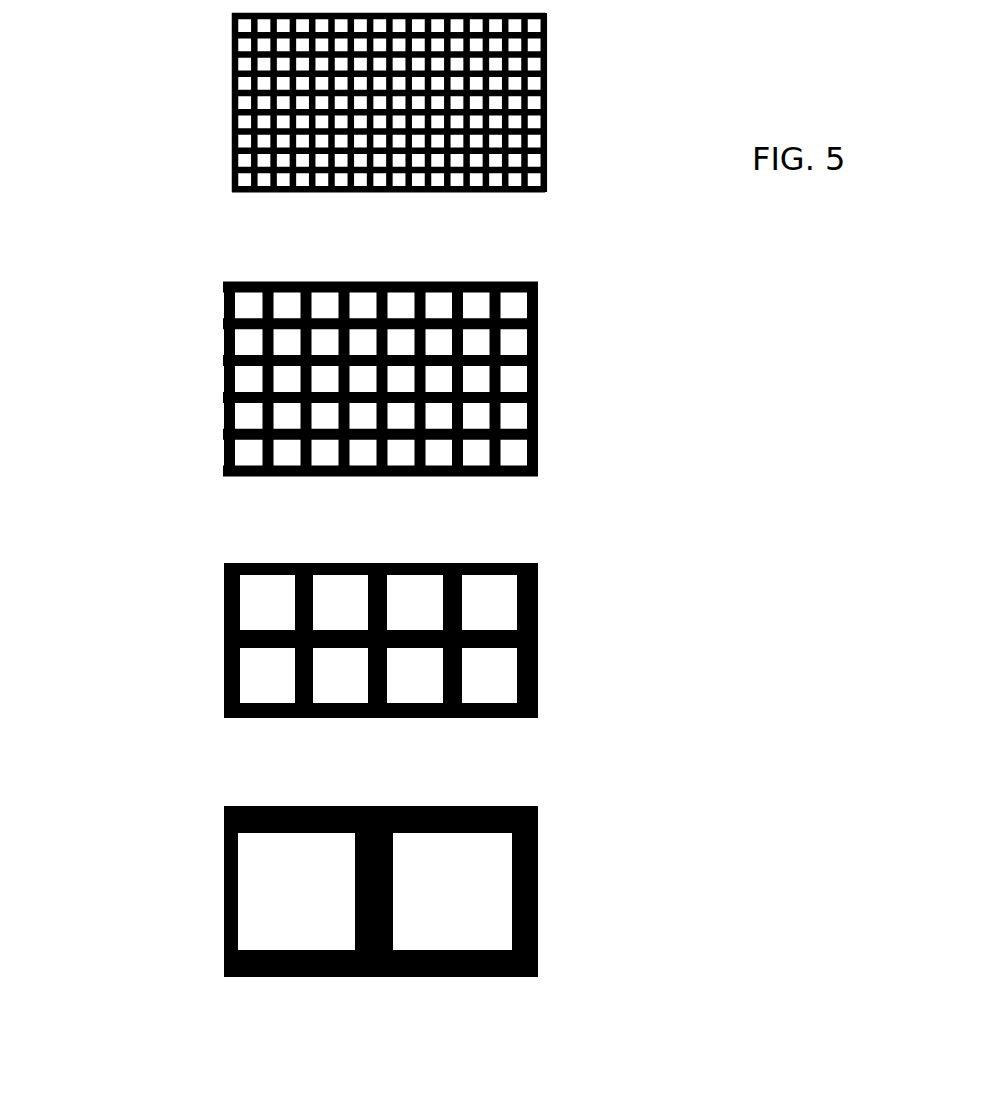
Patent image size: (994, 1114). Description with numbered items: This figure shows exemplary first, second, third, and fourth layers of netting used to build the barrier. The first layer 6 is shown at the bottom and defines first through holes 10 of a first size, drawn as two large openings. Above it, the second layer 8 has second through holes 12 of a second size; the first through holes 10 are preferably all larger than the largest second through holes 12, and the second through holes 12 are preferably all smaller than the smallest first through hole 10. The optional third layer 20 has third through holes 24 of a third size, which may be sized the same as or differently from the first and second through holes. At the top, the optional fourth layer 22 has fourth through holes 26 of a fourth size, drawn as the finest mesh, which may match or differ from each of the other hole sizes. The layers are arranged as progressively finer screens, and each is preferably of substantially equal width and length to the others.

The first layer 6 is at (538, 920).
The first through holes 10 is at (259, 902).
The second layer 8 is at (538, 680).
The second through holes 12 is at (259, 691).
The third layer 20 is at (538, 372).
The third through holes 24 is at (247, 381).
The fourth layer 22 is at (545, 82).
The fourth through holes 26 is at (220, 131).